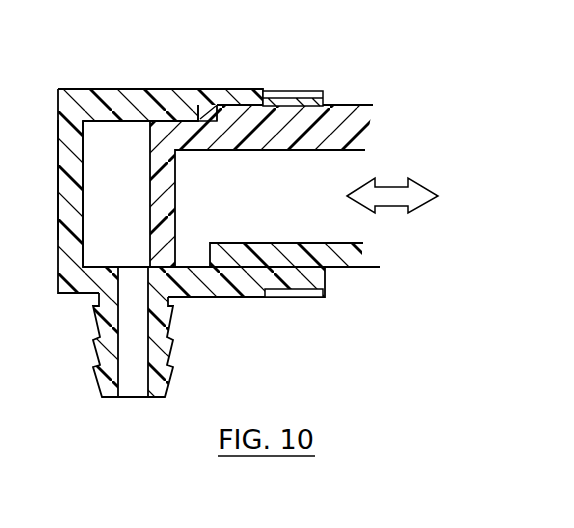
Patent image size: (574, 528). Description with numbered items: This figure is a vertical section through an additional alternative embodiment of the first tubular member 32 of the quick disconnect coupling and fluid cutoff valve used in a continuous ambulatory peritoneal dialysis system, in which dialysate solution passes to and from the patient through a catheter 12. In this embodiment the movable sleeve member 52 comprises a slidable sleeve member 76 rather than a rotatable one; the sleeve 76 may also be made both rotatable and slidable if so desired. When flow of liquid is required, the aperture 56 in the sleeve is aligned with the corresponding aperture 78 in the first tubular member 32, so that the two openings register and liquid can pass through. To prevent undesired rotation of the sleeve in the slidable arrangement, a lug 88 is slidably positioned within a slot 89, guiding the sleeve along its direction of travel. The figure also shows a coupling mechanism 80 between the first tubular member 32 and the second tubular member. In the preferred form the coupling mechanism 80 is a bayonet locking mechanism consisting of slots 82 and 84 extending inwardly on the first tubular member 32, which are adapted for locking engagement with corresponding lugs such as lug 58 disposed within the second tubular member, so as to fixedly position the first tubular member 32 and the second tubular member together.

The catheter 12 is at (58, 253).
The first tubular member 32 is at (58, 157).
The slot 89 is at (174, 112).
The movable sleeve member 52 is at (212, 108).
The slidable sleeve member 76 is at (232, 102).
The lug 88 is at (233, 113).
The coupling mechanism 80 is at (290, 73).
The slot 82 is at (318, 90).
The slot 84 is at (317, 292).
The aperture 56 is at (202, 255).
The aperture 78 is at (128, 273).
The lug 58 is at (97, 351).